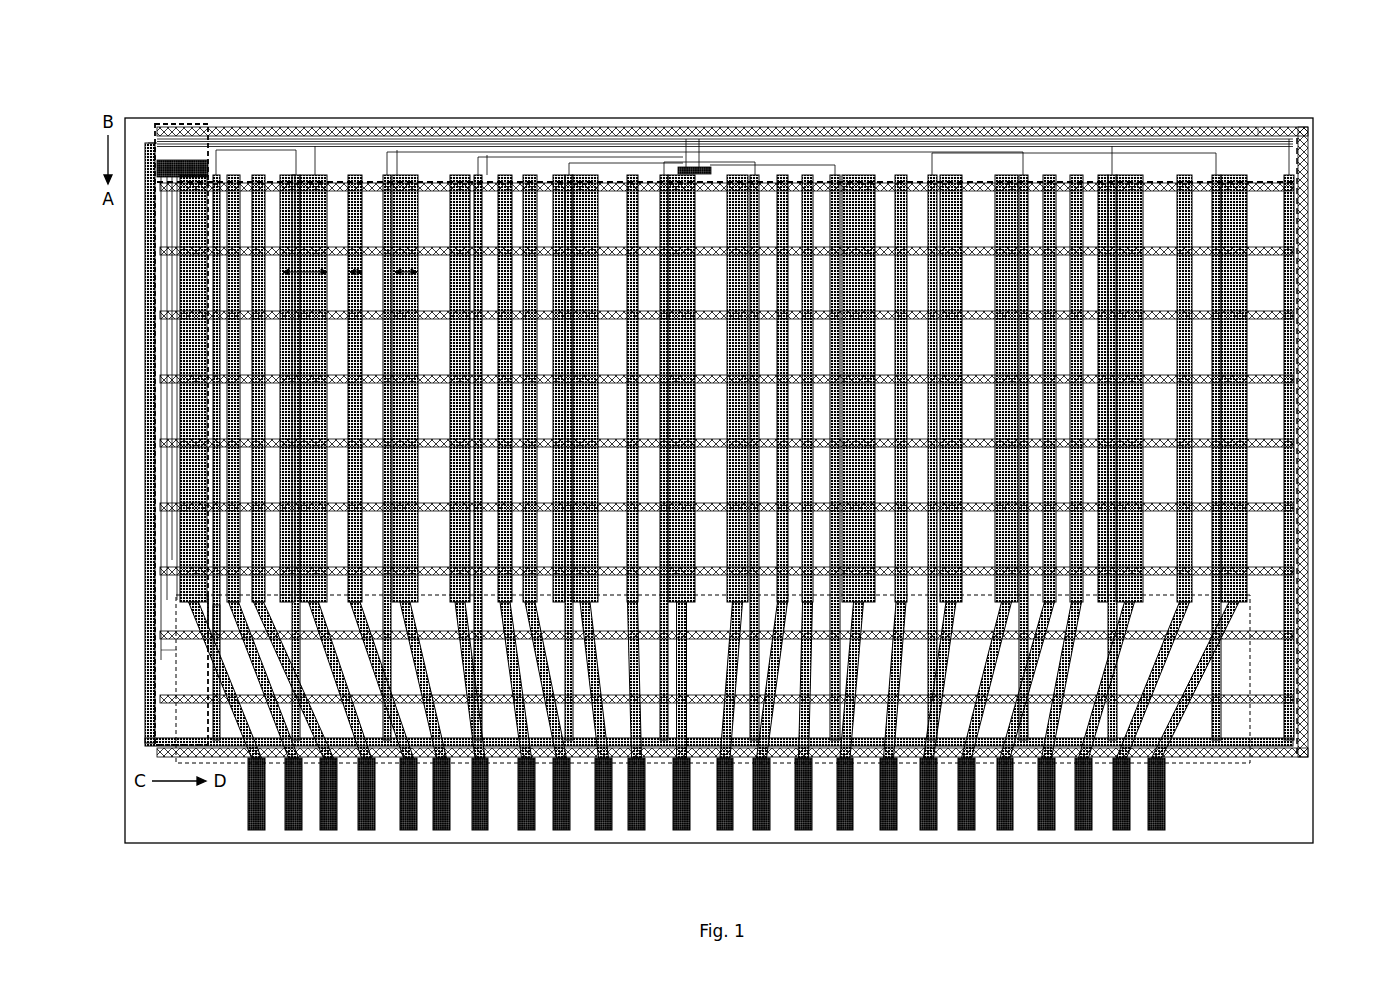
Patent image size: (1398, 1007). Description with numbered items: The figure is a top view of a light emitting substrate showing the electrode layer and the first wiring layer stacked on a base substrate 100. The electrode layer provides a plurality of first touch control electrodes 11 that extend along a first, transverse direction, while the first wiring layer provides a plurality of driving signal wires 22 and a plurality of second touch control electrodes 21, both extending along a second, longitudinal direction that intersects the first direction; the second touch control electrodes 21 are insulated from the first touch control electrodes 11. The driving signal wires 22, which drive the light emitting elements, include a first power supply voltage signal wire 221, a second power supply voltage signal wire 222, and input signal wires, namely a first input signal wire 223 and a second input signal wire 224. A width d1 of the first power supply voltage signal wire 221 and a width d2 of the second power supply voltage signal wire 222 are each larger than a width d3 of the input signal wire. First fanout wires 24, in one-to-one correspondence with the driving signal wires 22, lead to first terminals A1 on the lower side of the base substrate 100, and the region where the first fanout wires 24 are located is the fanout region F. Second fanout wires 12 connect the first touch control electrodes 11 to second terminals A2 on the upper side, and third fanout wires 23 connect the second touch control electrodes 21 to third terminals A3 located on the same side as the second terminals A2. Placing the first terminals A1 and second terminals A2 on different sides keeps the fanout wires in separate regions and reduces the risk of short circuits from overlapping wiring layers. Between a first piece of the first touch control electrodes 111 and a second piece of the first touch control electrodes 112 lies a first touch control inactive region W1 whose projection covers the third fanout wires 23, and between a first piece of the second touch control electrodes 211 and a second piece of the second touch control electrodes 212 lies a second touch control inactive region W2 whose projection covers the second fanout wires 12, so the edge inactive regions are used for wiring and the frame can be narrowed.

The base substrate 100 is at (1285, 823).
The first touch control electrodes 11 is at (775, 411).
The first piece of the first touch control electrodes 111 is at (1252, 132).
The second piece of the first touch control electrodes 112 is at (1253, 183).
The first touch control inactive region W1 is at (1258, 155).
The second fanout wires 12 is at (125, 443).
The second touch control inactive region W2 is at (170, 652).
The second touch control electrodes 21 is at (1215, 192).
The first piece of the second touch control electrodes 211 is at (205, 608).
The second piece of the second touch control electrodes 212 is at (212, 617).
The driving signal wires 22 is at (713, 317).
The first power supply voltage signal wire 221 is at (312, 198).
The second power supply voltage signal wire 222 is at (463, 198).
The first input signal wire 223 is at (540, 198).
The second input signal wire 224 is at (508, 198).
The third fanout wires 23 is at (1024, 183).
The first fanout wires 24 is at (287, 670).
The first terminals A1 is at (1163, 823).
The second terminals A2 is at (195, 160).
The third terminals A3 is at (699, 165).
The fanout region F is at (1250, 716).
The width of the first power supply voltage signal wire d1 is at (305, 281).
The width of the second power supply voltage signal wire d2 is at (405, 282).
The width of the input signal wire d3 is at (366, 272).